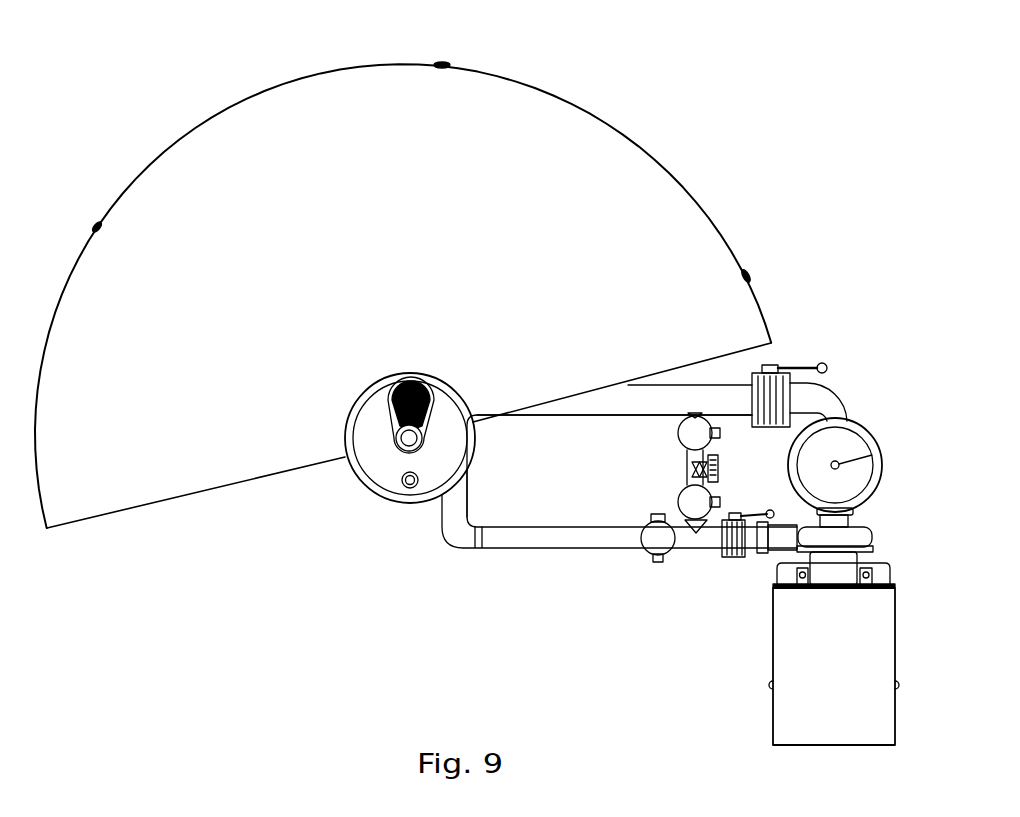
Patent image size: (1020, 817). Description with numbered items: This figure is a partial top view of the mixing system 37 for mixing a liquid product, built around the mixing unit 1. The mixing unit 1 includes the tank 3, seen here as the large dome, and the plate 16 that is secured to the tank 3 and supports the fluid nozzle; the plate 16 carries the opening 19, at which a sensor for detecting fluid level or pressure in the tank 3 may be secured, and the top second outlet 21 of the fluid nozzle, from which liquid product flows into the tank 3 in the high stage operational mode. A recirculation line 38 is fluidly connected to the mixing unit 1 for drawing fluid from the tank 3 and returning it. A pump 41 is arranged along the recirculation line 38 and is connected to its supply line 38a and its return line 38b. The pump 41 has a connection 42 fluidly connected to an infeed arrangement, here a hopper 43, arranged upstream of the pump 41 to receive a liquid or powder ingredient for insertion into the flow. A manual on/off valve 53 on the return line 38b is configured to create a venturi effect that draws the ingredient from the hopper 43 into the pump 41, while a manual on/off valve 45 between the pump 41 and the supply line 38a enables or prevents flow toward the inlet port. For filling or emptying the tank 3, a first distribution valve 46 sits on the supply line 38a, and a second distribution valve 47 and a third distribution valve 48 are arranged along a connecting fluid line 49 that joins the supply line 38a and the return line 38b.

The mixing unit 1 is at (401, 431).
The tank 3 is at (716, 221).
The plate 16 is at (410, 498).
The opening 19 is at (400, 482).
The top second outlet 21 is at (400, 435).
The mixing system 37 is at (681, 136).
The recirculation line 38 is at (619, 480).
The supply line 38a is at (508, 540).
The return line 38b is at (652, 403).
The pump 41 is at (800, 688).
The connection 42 is at (870, 531).
The hopper 43 is at (853, 430).
The manual on/off valve 45 is at (742, 548).
The first distribution valve 46 is at (640, 540).
The second distribution valve 47 is at (696, 425).
The third distribution valve 48 is at (702, 505).
The connecting fluid line 49 is at (687, 467).
The manual on/off valve 53 is at (776, 375).